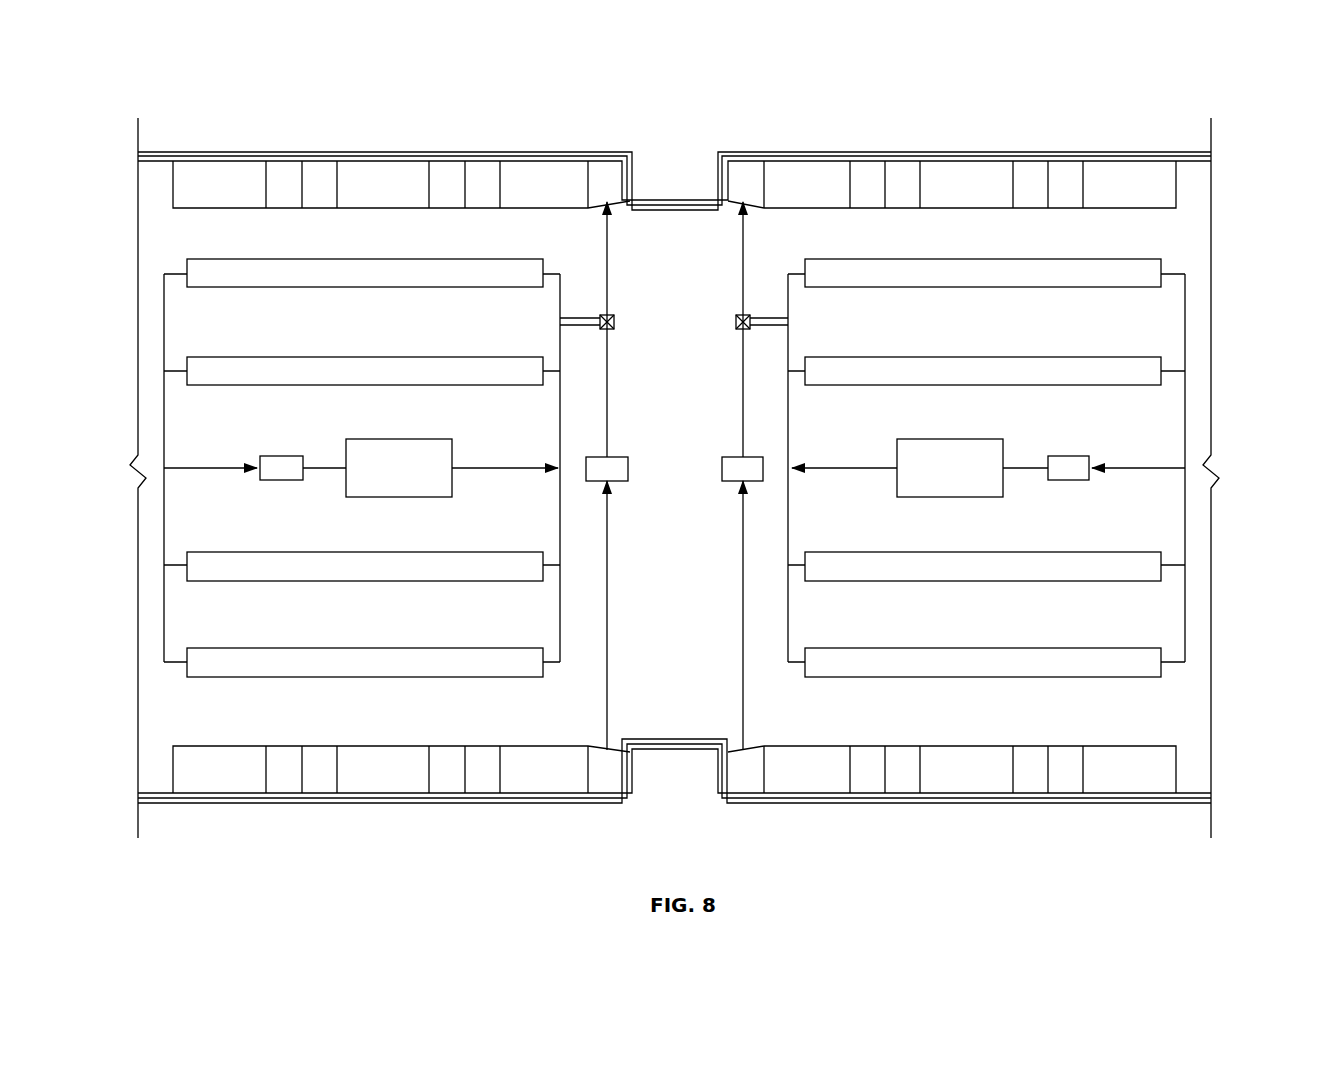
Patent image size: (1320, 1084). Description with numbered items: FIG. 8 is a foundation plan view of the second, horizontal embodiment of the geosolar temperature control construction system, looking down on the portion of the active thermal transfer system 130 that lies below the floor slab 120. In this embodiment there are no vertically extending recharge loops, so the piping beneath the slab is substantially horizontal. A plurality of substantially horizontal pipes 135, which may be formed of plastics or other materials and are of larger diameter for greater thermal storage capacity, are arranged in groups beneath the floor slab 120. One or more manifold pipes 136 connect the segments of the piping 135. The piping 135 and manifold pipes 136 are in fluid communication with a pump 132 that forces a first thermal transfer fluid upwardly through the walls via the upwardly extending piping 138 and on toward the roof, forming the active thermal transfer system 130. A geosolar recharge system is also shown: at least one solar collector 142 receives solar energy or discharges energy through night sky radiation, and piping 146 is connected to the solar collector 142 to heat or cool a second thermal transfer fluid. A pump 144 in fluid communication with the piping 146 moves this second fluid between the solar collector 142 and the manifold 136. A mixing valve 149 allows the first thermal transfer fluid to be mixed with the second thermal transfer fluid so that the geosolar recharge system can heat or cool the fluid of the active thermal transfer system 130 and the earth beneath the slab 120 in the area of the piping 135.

The floor slab 120 is at (1192, 190).
The upwardly extending piping 138 is at (175, 180).
The manifold pipes 136 is at (164, 328).
The substantially horizontal pipes 135 is at (330, 275).
The piping 146 is at (195, 468).
The pump 144 is at (290, 470).
The solar collector 142 is at (428, 460).
The mixing valve 149 is at (612, 313).
The pump 132 is at (614, 466).
The active thermal transfer system 130 is at (712, 418).